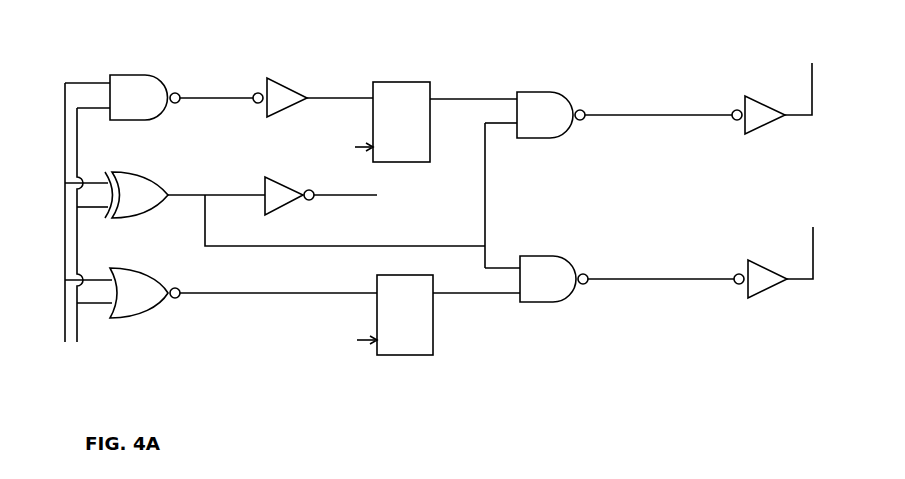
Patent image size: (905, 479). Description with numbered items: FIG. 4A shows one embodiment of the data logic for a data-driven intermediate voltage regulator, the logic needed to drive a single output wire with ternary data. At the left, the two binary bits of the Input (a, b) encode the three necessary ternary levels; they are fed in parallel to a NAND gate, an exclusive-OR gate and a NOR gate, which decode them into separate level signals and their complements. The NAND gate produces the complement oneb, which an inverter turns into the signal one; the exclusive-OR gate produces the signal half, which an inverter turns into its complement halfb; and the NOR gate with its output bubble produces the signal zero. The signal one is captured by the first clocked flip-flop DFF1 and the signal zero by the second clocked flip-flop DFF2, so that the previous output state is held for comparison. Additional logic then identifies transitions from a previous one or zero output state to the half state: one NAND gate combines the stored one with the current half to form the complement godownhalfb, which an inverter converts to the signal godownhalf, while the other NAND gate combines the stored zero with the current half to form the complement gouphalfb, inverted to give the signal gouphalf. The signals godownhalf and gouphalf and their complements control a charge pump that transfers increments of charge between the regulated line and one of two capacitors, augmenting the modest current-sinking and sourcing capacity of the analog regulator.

The inputs (a, b) Input is at (80, 226).
The complement of signal one oneb is at (181, 97).
The signal one is at (313, 97).
The D flip-flop for one DFF1 is at (421, 122).
The signal half is at (312, 195).
The complement of signal half halfb is at (347, 196).
The signal zero is at (243, 293).
The D flip-flop for zero DFF2 is at (425, 315).
The complement of signal godownhalf godownhalfb is at (624, 115).
The signal godownhalf is at (785, 89).
The complement of signal gouphalf gouphalfb is at (627, 278).
The signal gouphalf is at (782, 252).